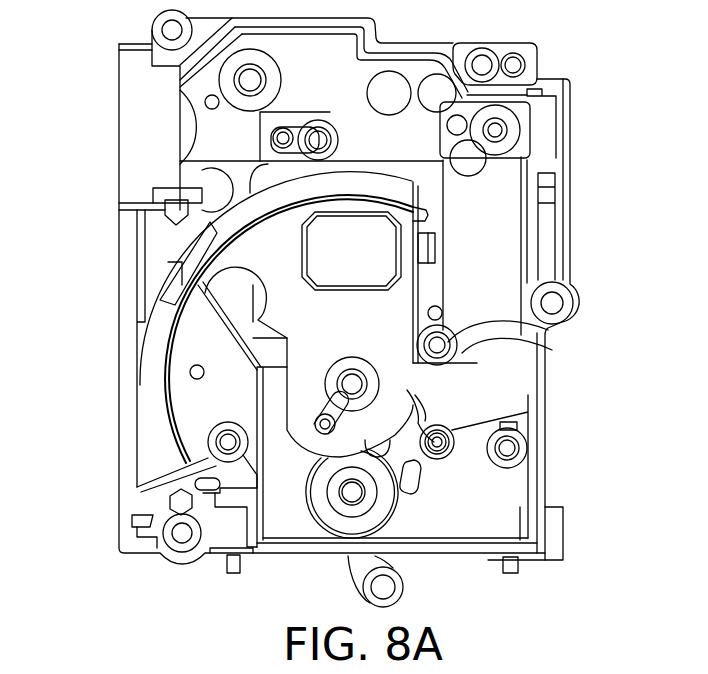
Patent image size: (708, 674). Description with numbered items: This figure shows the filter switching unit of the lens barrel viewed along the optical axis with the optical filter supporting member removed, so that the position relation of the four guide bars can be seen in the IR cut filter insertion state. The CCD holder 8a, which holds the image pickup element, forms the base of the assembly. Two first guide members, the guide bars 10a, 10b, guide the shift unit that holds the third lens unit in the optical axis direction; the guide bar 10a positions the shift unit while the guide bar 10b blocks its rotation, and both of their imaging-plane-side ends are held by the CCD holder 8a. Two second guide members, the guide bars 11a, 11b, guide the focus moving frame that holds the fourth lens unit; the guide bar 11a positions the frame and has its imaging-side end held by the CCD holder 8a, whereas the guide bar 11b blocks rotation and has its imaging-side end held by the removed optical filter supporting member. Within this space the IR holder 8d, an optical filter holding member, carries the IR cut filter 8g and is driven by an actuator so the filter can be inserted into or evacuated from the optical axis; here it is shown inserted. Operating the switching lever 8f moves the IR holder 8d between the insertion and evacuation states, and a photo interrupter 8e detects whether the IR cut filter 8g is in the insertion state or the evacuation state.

The CCD holder 8a is at (535, 62).
The guide bar 10a is at (250, 80).
The guide bar 11a is at (495, 130).
The IR cut filter 8g is at (372, 245).
The IR holder 8d is at (368, 326).
The photo interrupter 8e is at (178, 287).
The guide bar 10b is at (555, 356).
The guide bar 11b is at (190, 374).
The switching lever 8f is at (335, 523).